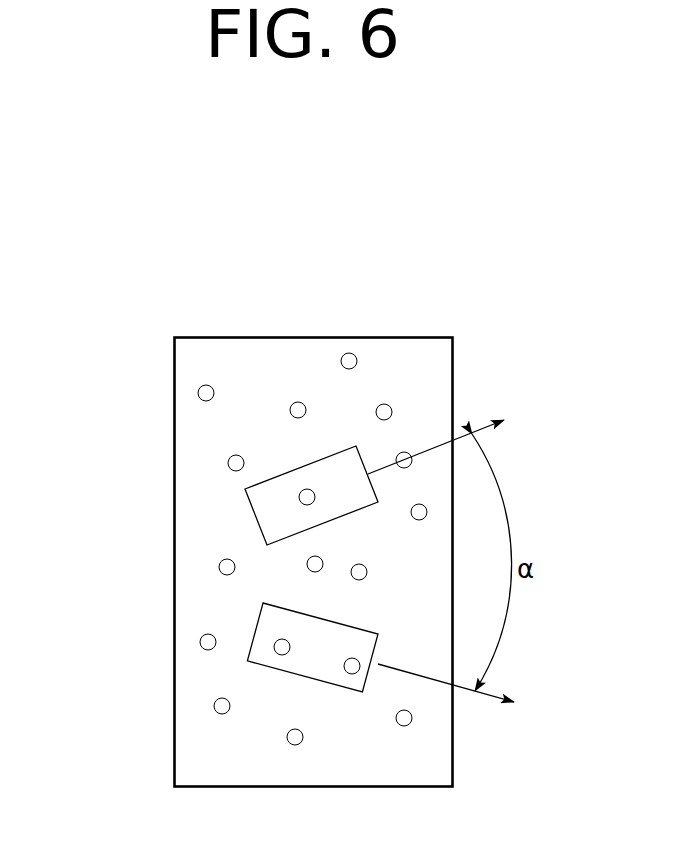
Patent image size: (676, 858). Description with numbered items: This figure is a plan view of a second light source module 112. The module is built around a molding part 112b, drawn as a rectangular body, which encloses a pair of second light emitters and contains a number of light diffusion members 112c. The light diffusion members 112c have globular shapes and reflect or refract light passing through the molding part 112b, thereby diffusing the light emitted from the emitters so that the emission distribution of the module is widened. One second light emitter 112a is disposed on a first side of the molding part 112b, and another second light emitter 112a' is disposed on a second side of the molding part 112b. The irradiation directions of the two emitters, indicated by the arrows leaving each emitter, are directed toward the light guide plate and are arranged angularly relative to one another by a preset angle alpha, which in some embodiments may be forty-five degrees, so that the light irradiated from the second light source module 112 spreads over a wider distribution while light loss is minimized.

The second light source module 112 is at (339, 202).
The second light emitter 112a is at (292, 652).
The second light emitter 112a' is at (284, 482).
The molding part 112b is at (187, 738).
The light diffusion member 112c is at (295, 738).